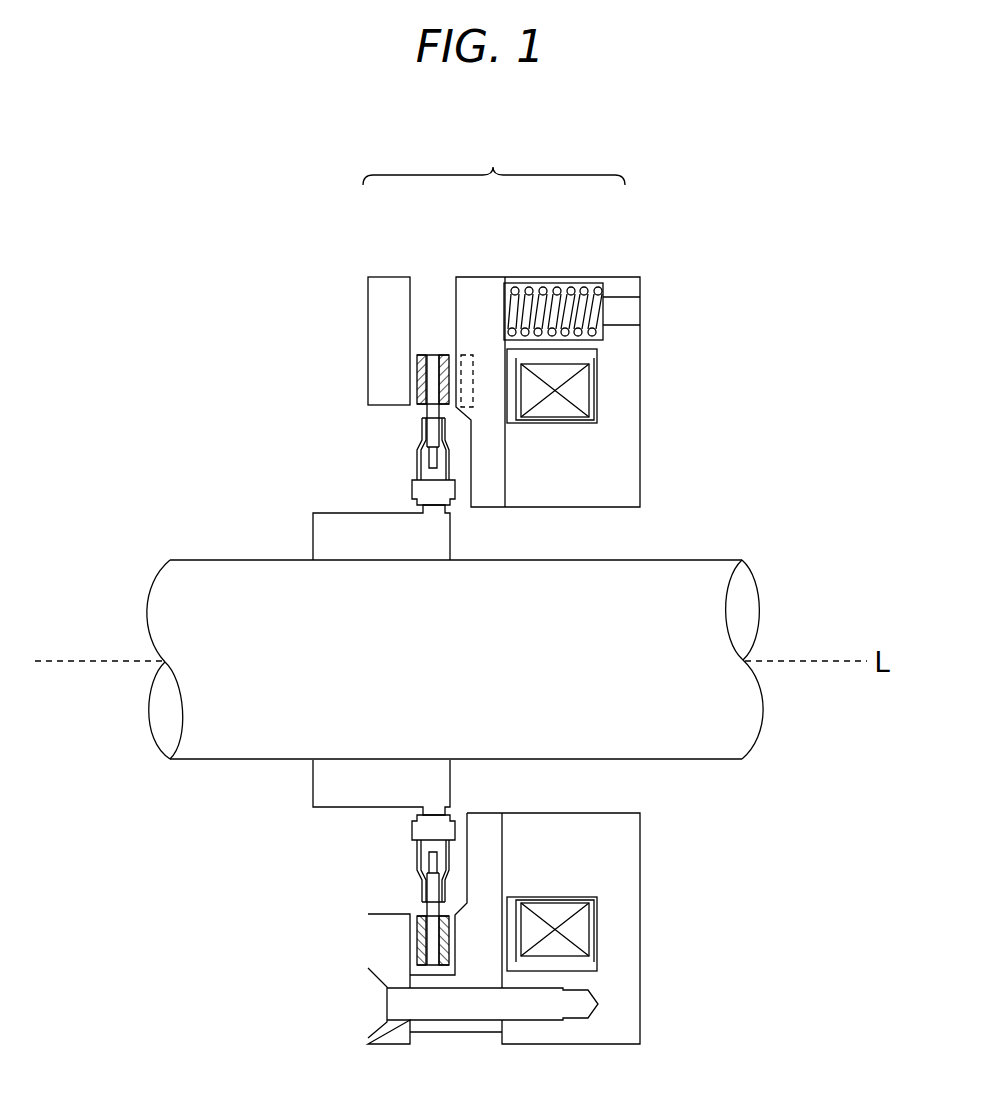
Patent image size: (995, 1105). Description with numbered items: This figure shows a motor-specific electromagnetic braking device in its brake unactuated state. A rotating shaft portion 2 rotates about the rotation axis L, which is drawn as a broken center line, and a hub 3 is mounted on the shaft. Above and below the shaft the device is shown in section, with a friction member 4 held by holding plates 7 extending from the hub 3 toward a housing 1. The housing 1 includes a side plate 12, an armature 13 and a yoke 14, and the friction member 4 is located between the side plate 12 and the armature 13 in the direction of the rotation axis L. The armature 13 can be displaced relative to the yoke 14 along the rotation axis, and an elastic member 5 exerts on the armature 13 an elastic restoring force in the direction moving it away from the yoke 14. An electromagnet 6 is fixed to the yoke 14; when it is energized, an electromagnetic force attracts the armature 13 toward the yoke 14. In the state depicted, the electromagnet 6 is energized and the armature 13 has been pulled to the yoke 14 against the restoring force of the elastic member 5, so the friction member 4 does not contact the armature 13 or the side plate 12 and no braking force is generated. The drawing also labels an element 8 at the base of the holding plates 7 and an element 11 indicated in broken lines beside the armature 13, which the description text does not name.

The housing 1 is at (493, 172).
The rotating shaft portion 2 is at (172, 620).
The hub 3 is at (313, 537).
The friction member 4 is at (433, 377).
The elastic member 5 is at (583, 312).
The electromagnet 6 is at (583, 380).
The holding plates 7 is at (420, 438).
The flange 8 is at (412, 488).
The pin hole 11 is at (465, 345).
The side plate 12 is at (388, 287).
The armature 13 is at (483, 287).
The yoke 14 is at (622, 285).